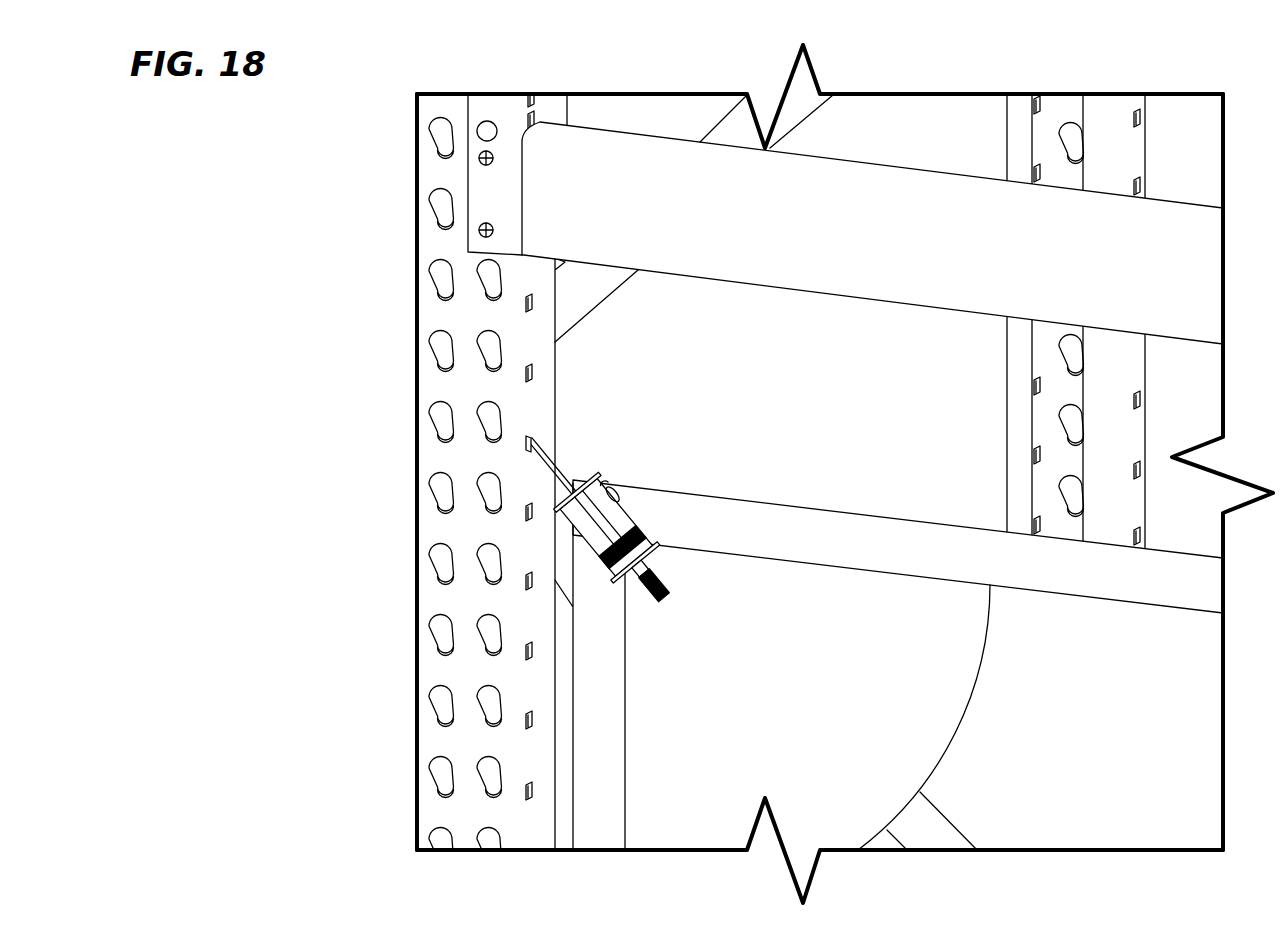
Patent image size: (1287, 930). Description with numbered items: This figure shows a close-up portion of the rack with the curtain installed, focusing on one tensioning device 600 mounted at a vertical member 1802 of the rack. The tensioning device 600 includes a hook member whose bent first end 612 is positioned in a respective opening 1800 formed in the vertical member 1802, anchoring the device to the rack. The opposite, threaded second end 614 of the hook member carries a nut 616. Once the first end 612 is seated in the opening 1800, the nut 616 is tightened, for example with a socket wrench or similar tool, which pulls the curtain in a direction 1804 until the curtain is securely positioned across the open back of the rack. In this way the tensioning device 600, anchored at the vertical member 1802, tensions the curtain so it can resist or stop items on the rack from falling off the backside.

The vertical member 1802 is at (428, 382).
The opening 1800 is at (528, 437).
The first end 612 is at (533, 447).
The direction 1804 is at (647, 448).
The tensioning device 600 is at (667, 512).
The nut 616 is at (643, 570).
The second end 614 is at (657, 594).